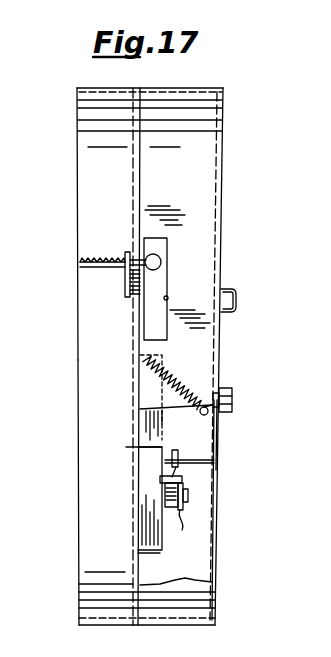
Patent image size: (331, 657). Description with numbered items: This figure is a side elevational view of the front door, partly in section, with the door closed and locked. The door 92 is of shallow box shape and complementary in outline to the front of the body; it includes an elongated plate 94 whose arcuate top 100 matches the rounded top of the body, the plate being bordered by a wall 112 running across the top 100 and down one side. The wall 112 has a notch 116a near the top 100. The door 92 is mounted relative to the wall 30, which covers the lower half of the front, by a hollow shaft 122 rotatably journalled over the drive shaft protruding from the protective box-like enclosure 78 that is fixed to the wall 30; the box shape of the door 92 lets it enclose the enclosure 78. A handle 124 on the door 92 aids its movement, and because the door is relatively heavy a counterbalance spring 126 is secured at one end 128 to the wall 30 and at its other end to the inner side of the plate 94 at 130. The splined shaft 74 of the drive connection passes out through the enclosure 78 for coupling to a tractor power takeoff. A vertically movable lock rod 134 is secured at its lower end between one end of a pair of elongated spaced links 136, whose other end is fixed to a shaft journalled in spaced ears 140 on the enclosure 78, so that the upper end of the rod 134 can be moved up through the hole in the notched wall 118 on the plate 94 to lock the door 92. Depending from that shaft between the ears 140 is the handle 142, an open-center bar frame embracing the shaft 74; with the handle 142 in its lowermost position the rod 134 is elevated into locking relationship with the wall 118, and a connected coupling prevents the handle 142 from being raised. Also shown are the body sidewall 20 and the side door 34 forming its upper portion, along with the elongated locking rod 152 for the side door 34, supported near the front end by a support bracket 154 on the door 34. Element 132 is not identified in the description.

The arcuate top 100 is at (222, 89).
The door 92 is at (240, 150).
The elongated plate 94 is at (221, 182).
The wall 112 is at (203, 209).
The side door 34 is at (77, 212).
The locking rod 152 is at (95, 258).
The support bracket 154 is at (124, 282).
The notch 116a is at (168, 297).
The handle 124 is at (237, 298).
The counterbalance spring 126 is at (184, 372).
The spring end 128 is at (140, 370).
The sidewall 20 is at (77, 390).
The wall 30 is at (138, 393).
The hollow shaft 122 is at (235, 399).
The spring attachment point 130 is at (218, 428).
The lock rod 134 is at (140, 447).
The links 136 is at (185, 466).
The notched wall 118 is at (203, 455).
The ears 140 is at (162, 470).
The splined shaft 74 is at (190, 497).
The handle 142 is at (182, 530).
The solenoid plunger 132 is at (193, 512).
The enclosure 78 is at (138, 553).